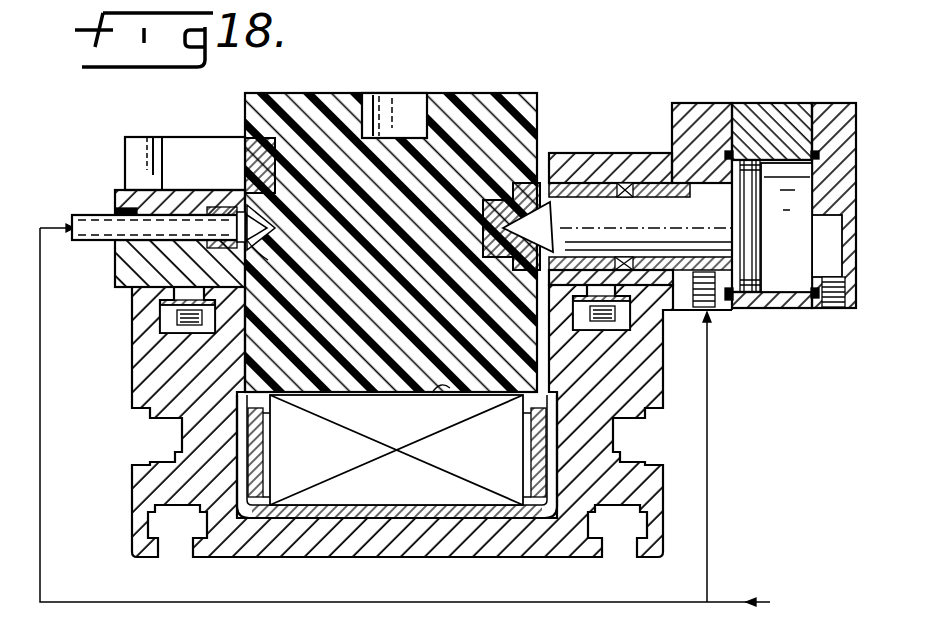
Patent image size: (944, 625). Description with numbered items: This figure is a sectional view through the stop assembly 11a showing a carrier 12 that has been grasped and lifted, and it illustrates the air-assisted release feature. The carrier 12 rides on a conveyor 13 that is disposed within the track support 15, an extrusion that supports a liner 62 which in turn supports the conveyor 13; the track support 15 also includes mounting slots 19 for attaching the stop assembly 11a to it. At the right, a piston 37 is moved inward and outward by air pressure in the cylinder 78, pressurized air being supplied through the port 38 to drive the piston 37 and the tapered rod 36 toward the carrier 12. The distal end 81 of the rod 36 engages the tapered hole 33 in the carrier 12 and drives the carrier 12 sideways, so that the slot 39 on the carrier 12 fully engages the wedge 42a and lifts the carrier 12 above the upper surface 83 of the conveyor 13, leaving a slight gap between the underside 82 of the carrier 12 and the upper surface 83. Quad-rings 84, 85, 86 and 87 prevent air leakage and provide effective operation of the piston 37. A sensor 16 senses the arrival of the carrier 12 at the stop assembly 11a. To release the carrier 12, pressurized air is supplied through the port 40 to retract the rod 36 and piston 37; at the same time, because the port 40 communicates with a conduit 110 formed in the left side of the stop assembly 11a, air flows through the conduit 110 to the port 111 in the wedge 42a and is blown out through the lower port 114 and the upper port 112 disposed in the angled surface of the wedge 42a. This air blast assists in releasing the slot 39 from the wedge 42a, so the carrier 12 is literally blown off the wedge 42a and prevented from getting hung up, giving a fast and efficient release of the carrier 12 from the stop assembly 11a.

The stop assembly 11a is at (812, 98).
The carrier 12 is at (492, 88).
The conveyor 13 is at (415, 490).
The track support 15 is at (266, 564).
The sensor 16 is at (140, 137).
The mounting slots 19 is at (185, 330).
The hole 33 is at (535, 214).
The rod 36 is at (662, 210).
The piston 37 is at (763, 232).
The port 38 is at (833, 308).
The slot 39 is at (237, 207).
The port 40 is at (702, 310).
The wedge 42a is at (195, 192).
The liner 62 is at (362, 515).
The cylinder 78 is at (787, 295).
The distal end 81 is at (641, 260).
The underside 82 is at (360, 392).
The upper surface 83 is at (432, 393).
The quad-ring 84 is at (625, 183).
The quad-ring 85 is at (728, 305).
The quad-ring 86 is at (752, 155).
The quad-ring 87 is at (810, 310).
The conduit 110 is at (88, 215).
The port 111 is at (258, 248).
The upper port 112 is at (268, 214).
The lower port 114 is at (270, 230).